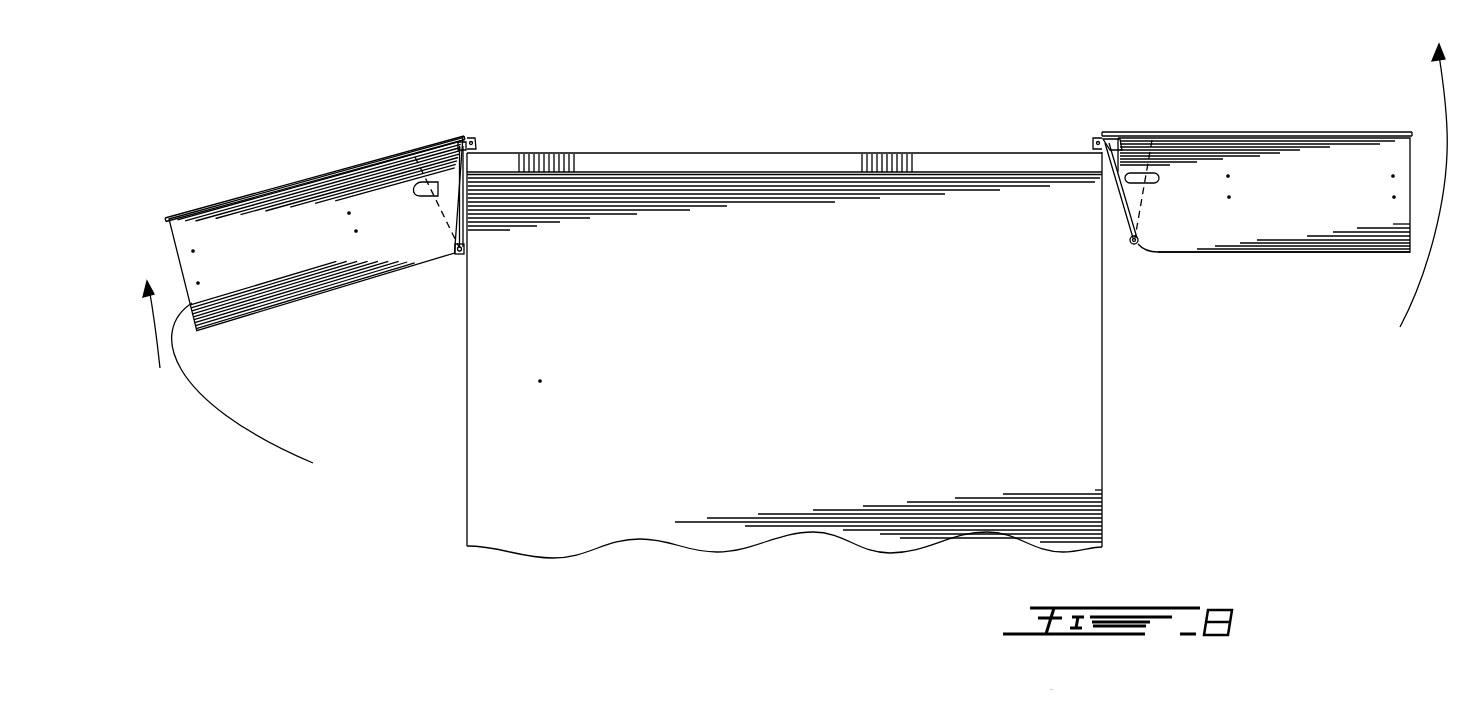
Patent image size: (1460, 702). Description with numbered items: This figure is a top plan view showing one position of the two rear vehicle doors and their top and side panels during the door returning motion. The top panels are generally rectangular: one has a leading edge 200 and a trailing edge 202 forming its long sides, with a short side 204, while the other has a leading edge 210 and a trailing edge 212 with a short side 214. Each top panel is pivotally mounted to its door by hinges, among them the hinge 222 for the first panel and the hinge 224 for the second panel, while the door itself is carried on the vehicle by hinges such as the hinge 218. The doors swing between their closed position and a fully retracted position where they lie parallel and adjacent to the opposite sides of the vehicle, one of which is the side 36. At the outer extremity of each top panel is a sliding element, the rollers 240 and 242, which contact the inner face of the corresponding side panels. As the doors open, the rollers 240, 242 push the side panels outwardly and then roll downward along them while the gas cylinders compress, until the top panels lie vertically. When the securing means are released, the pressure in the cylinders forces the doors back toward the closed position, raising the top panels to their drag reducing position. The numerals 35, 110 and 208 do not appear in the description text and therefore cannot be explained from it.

The side wall 35 is at (516, 487).
The side of the vehicle 36 is at (1109, 415).
The support strut 110 is at (425, 190).
The leading edge 200 is at (1260, 134).
The trailing edge 202 is at (1290, 247).
The short side 204 is at (1429, 187).
The hinge bracket 208 is at (1120, 159).
The leading edge 210 is at (291, 189).
The trailing edge 212 is at (291, 302).
The short side 214 is at (225, 372).
The hinge 218 is at (456, 140).
The hinge 222 is at (1395, 135).
The hinge 224 is at (180, 216).
The roller 240 is at (1130, 245).
The roller 242 is at (464, 252).